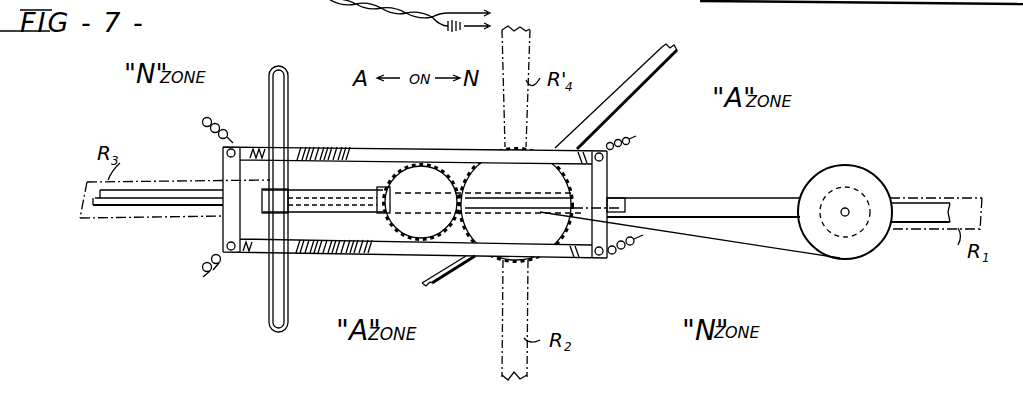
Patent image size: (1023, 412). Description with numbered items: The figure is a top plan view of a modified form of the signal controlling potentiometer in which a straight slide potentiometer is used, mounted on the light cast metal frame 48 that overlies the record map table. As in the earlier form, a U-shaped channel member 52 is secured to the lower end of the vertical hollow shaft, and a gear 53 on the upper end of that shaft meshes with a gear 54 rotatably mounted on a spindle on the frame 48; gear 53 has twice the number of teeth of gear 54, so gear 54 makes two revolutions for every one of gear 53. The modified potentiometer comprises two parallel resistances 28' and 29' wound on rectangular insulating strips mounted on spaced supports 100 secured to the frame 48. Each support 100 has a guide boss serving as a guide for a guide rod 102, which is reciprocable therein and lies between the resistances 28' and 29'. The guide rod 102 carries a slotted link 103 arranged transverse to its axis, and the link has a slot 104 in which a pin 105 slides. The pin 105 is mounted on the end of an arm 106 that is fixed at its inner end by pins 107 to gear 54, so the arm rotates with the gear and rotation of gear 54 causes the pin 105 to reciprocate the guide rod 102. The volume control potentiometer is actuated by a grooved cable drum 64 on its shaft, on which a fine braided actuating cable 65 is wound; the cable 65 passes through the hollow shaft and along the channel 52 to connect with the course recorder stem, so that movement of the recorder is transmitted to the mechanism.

The spaced supports 100 is at (223, 228).
The guide rod 102 is at (133, 193).
The slotted link 103 is at (285, 307).
The slot 104 is at (281, 283).
The pin 105 is at (289, 188).
The arm 106 is at (404, 181).
The pins 107 is at (386, 189).
The gear 53 is at (534, 147).
The gear 54 is at (430, 166).
The U-shaped channel member 52 is at (645, 74).
The resistance 29' is at (330, 138).
The resistance 28' is at (347, 261).
The grooved cable drum 64 is at (876, 178).
The actuating cable 65 is at (757, 247).
The frame 48 is at (895, 219).